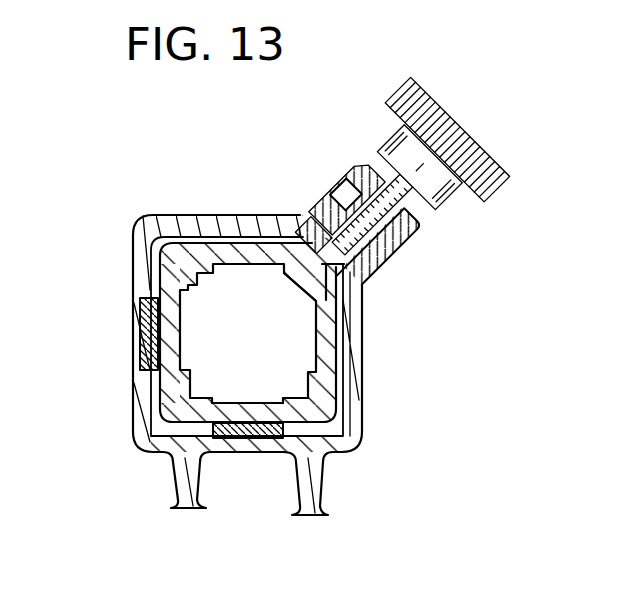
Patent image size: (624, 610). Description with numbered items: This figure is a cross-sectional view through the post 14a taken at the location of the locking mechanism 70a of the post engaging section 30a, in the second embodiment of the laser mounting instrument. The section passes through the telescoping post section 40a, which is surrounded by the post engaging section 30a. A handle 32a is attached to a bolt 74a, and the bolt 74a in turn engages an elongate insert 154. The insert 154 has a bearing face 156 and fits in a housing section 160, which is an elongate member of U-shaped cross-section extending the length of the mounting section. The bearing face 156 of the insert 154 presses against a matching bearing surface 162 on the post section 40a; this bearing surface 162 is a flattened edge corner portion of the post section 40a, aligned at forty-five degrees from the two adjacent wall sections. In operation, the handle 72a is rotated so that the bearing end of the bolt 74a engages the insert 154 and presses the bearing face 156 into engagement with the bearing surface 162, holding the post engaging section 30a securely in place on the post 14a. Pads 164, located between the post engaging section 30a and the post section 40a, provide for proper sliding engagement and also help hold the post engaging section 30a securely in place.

The locking mechanism 70a is at (357, 146).
The handle 72a is at (473, 152).
The bolt 74a is at (378, 250).
The housing section 160 is at (337, 196).
The elongate insert 154 is at (312, 212).
The bearing surface 162 is at (313, 240).
The bearing face 156 is at (290, 292).
The pads 164 is at (147, 333).
The handle 32a is at (350, 315).
The post 14a is at (330, 340).
The post engaging section 30a is at (350, 385).
The post section 40a is at (352, 414).